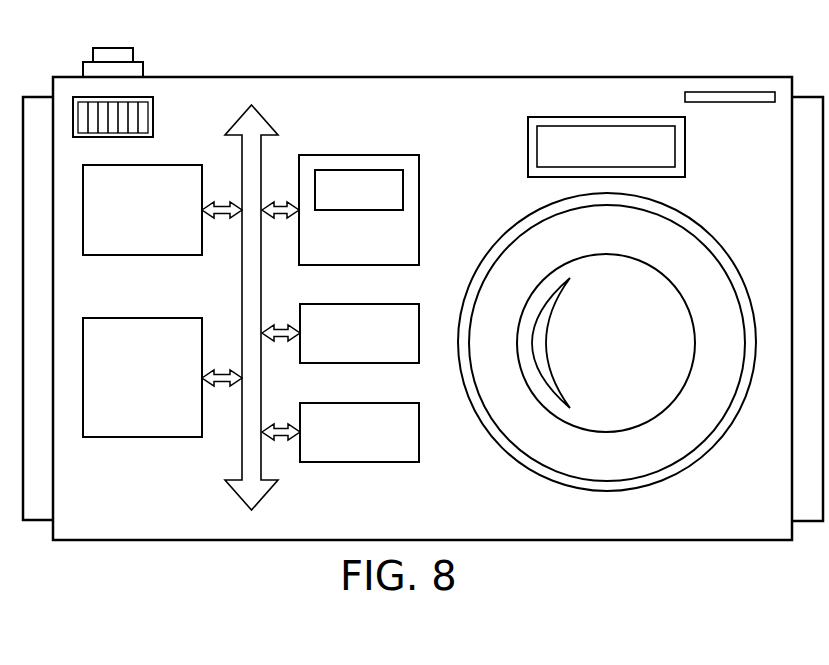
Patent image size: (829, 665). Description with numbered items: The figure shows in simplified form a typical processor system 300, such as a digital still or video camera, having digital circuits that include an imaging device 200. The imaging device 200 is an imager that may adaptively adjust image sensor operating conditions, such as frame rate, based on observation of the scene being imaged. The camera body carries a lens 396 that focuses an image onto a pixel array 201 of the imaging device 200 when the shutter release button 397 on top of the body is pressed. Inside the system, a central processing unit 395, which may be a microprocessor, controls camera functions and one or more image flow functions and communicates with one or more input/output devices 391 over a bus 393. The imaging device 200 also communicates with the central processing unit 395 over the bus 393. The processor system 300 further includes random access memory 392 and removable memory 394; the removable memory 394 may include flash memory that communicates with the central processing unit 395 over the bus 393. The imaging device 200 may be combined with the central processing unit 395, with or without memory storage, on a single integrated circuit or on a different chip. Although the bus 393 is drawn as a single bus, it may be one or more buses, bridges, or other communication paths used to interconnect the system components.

The processor system 300 is at (705, 43).
The shutter release button 397 is at (113, 53).
The lens 396 is at (685, 250).
The bus 393 is at (247, 453).
The central processing unit (CPU) 395 is at (123, 248).
The random access memory (RAM) 392 is at (162, 323).
The imaging device 200 is at (363, 223).
The pixel array 201 is at (346, 199).
The input/output (I/O) device 391 is at (378, 358).
The removable memory 394 is at (378, 455).